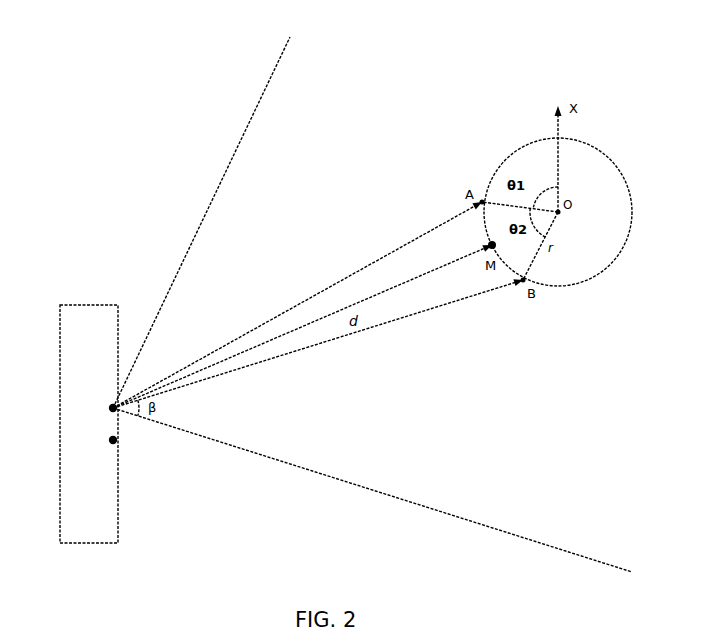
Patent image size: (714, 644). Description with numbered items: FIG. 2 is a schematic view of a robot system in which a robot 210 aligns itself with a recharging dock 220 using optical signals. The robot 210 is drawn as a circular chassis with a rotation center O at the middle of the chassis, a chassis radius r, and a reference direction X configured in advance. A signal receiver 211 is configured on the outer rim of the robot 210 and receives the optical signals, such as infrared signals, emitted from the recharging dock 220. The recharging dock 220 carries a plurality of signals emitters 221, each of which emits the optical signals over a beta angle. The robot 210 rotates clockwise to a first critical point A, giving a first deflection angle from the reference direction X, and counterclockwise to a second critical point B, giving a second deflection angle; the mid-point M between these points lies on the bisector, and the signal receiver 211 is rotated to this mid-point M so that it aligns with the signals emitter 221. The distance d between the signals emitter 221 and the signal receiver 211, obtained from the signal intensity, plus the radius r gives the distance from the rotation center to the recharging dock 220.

The robot 210 is at (510, 158).
The signal receiver 211 is at (488, 246).
The recharging dock 220 is at (88, 305).
The signals emitter 221 is at (111, 405).